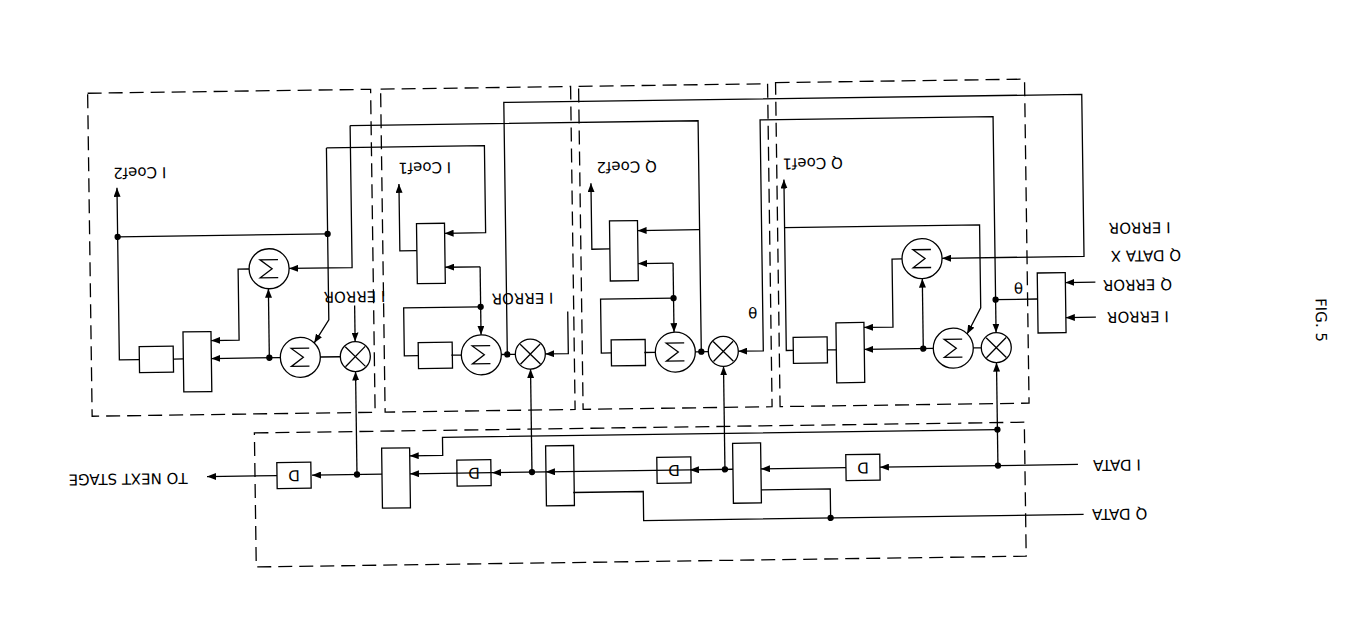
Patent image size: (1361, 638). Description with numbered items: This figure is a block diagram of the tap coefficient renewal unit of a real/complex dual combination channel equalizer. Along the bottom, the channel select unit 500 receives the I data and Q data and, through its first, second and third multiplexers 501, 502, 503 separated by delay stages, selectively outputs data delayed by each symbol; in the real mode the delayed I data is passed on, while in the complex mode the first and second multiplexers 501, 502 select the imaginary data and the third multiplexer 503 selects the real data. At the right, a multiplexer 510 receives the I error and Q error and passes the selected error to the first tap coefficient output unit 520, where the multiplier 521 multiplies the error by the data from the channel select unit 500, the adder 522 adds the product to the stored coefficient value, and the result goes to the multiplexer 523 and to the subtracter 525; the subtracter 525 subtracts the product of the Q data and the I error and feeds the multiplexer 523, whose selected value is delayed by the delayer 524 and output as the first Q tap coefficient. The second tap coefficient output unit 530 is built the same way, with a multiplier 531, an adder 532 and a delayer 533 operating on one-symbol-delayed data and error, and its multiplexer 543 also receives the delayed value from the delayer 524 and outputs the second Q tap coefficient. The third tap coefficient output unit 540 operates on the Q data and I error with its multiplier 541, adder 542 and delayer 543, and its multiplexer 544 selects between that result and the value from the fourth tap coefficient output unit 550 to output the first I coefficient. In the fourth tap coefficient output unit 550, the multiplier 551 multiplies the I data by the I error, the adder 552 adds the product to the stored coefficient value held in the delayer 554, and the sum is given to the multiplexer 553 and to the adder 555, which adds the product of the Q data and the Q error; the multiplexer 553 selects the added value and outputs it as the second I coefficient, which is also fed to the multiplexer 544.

The channel select unit 500 is at (571, 561).
The first multiplexer 501 is at (731, 497).
The second multiplexer 502 is at (544, 497).
The third multiplexer 503 is at (380, 497).
The multiplexer 510 is at (1052, 338).
The first tap coefficient output unit 520 is at (889, 84).
The multiplier 521 is at (990, 366).
The adder 522 is at (938, 368).
The multiplexer 523 is at (850, 325).
The delayer 524 is at (810, 339).
The subtracter 525 is at (904, 256).
The second tap coefficient output unit 530 is at (672, 85).
The multiplier 531 is at (729, 366).
The adder 532 is at (661, 367).
The delay register 533 is at (626, 339).
The third tap coefficient output unit 540 is at (475, 85).
The multiplier 541 is at (536, 366).
The adder 542 is at (467, 368).
The multiplexer / delay register 543 is at (630, 220).
The multiplexer 544 is at (436, 220).
The fourth tap coefficient output unit 550 is at (240, 85).
The multiplier 551 is at (349, 366).
The adder 552 is at (286, 368).
The multiplexer 553 is at (197, 325).
The delay register 554 is at (157, 339).
The adder 555 is at (252, 257).